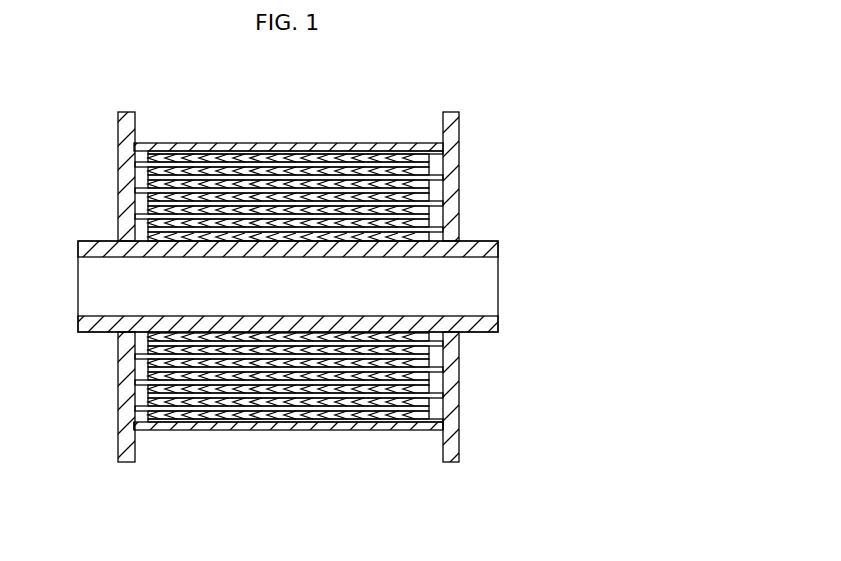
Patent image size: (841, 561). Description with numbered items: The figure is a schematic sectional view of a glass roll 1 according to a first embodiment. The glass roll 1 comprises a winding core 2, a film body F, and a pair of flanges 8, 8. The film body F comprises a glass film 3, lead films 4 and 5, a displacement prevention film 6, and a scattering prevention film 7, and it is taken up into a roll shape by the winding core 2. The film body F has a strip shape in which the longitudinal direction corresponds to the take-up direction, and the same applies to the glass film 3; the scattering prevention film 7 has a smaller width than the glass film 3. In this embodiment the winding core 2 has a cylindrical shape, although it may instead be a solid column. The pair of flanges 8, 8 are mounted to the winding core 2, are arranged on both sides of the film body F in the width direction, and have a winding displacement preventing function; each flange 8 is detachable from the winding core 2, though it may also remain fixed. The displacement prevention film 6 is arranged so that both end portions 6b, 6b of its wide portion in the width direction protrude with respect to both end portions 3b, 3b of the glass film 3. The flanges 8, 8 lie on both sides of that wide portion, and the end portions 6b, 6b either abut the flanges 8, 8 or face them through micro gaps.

The glass roll 1 is at (538, 168).
The winding core 2 is at (482, 242).
The glass film 3 is at (148, 385).
The end portion of the glass film 3b is at (135, 406).
The lead film 4 is at (433, 419).
The lead film 5 is at (148, 345).
The displacement prevention film 6 is at (283, 431).
The end portion of the wide portion 6b is at (138, 431).
The scattering prevention film 7 is at (148, 368).
The flange 8 is at (118, 130).
The film body F is at (281, 143).